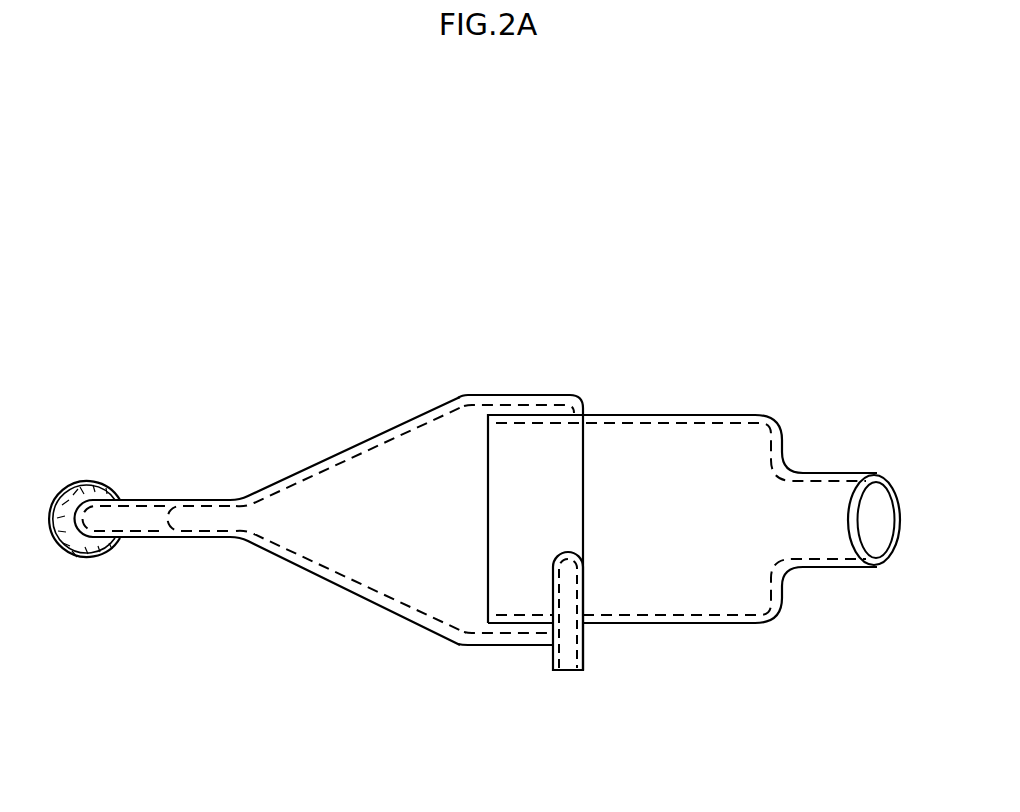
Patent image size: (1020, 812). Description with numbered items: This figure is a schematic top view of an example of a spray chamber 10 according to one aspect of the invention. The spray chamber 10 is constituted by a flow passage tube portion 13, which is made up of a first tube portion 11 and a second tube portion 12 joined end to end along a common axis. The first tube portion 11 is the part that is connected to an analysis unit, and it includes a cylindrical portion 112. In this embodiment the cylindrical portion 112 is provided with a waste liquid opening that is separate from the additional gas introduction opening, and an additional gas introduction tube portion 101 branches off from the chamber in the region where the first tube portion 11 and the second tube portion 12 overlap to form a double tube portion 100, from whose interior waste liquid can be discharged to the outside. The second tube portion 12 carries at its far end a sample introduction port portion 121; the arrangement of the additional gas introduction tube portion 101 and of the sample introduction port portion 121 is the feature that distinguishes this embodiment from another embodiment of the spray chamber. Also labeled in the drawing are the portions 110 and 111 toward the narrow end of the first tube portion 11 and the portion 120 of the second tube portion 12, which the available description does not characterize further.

The spray chamber 10 is at (272, 702).
The first tube portion 11 is at (440, 276).
The second tube portion 12 is at (634, 276).
The flow passage tube portion 13 is at (705, 170).
The double tube portion 100 is at (582, 690).
The additional gas introduction tube portion 101 is at (583, 637).
The handle 110 is at (202, 500).
The tapered section 111 is at (327, 450).
The cylindrical portion 112 is at (527, 393).
The main body 120 is at (705, 413).
The sample introduction port portion 121 is at (820, 463).